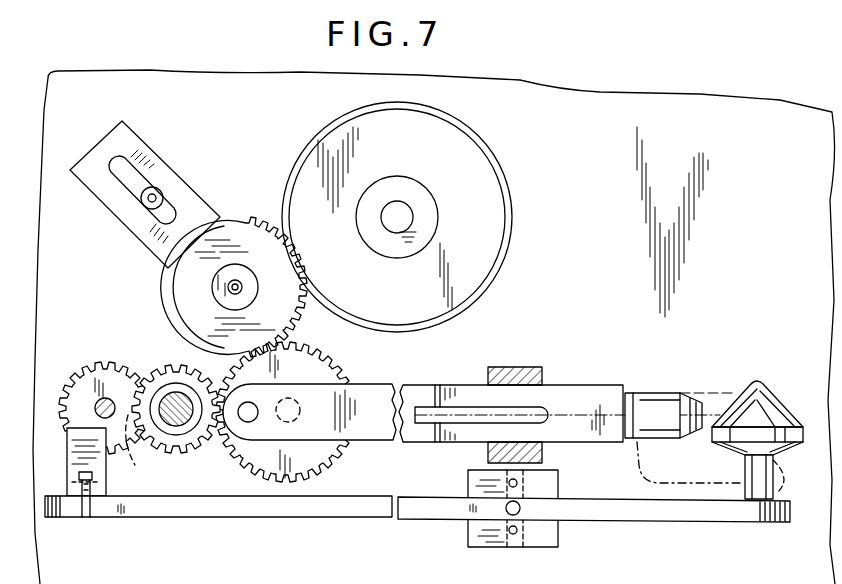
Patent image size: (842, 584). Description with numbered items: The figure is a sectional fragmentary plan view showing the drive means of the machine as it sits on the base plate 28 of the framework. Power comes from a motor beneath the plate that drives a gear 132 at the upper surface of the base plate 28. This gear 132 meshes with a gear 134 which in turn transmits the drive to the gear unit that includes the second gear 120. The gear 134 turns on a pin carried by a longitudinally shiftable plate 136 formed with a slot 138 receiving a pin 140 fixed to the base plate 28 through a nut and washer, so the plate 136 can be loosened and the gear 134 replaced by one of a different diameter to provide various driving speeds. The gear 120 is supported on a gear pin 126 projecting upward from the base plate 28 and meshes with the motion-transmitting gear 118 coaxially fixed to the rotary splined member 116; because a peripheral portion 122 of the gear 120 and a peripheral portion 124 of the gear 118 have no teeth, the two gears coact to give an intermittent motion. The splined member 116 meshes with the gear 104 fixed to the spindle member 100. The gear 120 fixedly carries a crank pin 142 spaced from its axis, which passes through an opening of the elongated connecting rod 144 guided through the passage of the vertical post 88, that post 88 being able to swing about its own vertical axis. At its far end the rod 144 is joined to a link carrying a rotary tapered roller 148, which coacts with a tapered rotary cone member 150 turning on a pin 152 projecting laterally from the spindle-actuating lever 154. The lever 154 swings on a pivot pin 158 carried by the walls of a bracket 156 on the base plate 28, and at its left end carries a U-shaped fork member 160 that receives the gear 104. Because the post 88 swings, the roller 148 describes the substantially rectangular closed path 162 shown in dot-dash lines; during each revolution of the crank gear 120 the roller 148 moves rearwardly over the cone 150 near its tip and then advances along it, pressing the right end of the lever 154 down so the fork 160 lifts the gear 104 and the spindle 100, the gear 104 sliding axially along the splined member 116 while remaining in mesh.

The base plate 28 is at (578, 273).
The vertical post 88 is at (535, 367).
The spindle member 100 is at (97, 402).
The gear 104 is at (118, 383).
The rotary splined member 116 is at (183, 350).
The motion-transmitting gear 118 is at (183, 456).
The second gear 120 is at (328, 362).
The peripheral portion 122 is at (326, 466).
The peripheral portion 124 is at (128, 455).
The gear pin 126 is at (306, 404).
The gear 132 is at (478, 250).
The gear 134 is at (240, 237).
The shiftable plate 136 is at (150, 158).
The slot 138 is at (118, 166).
The pin 140 is at (152, 198).
The crank pin 142 is at (255, 419).
The connecting rod 144 is at (415, 443).
The tapered roller 148 is at (660, 393).
The cone member 150 is at (768, 410).
The pin 152 is at (763, 495).
The spindle-actuating lever 154 is at (655, 513).
The bracket 156 is at (550, 540).
The pivot pin 158 is at (508, 553).
The fork member 160 is at (72, 478).
The closed path 162 is at (647, 468).